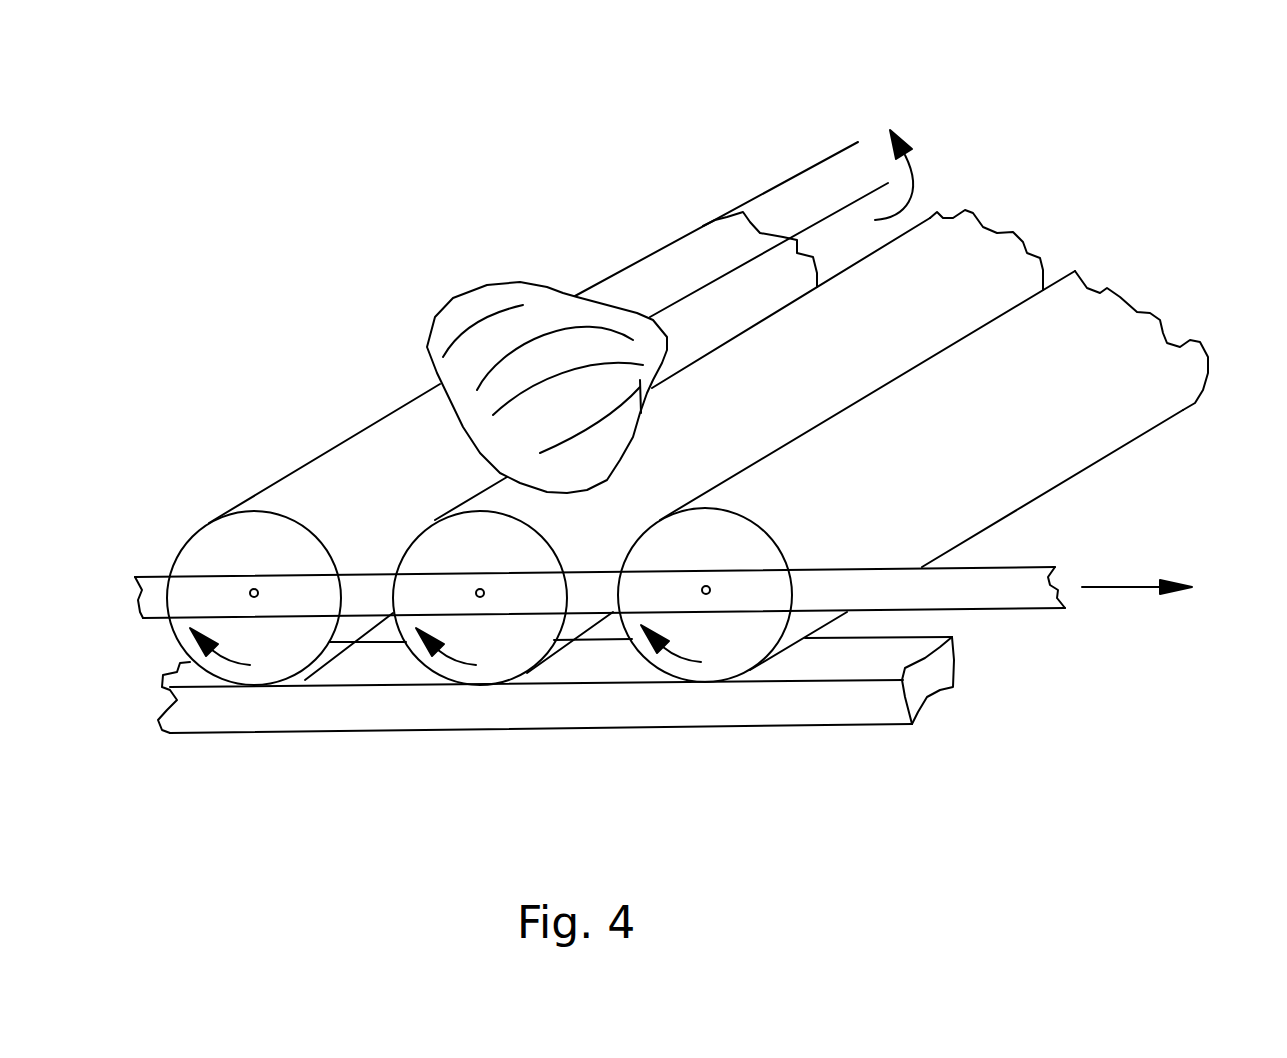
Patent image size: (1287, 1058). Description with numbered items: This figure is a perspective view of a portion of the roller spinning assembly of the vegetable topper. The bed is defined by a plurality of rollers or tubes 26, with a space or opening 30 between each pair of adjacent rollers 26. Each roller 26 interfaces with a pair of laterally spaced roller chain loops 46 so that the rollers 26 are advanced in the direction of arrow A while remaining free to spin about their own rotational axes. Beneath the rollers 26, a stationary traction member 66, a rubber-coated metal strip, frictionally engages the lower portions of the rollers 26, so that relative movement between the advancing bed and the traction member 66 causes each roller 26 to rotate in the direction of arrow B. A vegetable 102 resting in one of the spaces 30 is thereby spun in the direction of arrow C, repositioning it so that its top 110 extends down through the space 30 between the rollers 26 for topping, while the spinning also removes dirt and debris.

The roller 26 is at (980, 280).
The space 30 is at (380, 560).
The roller chain loop 46 is at (1002, 608).
The traction member 66 is at (805, 703).
The vegetable 102 is at (500, 330).
The top 110 is at (808, 177).